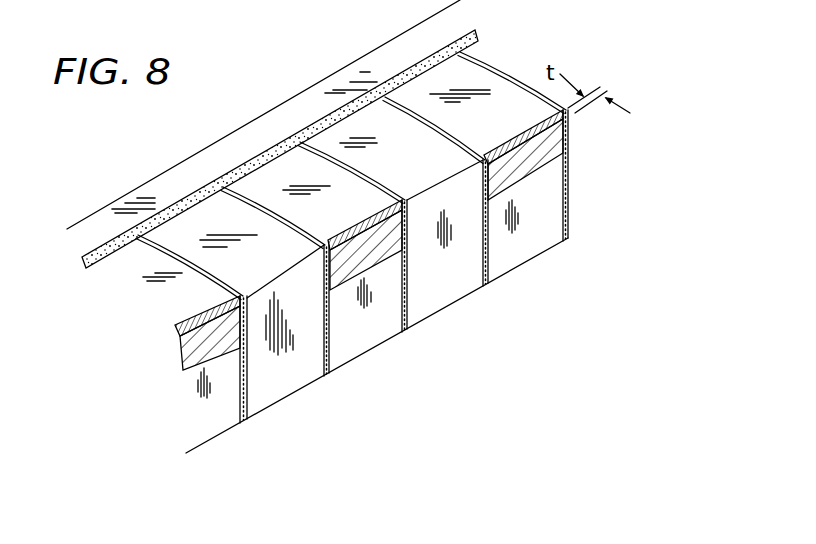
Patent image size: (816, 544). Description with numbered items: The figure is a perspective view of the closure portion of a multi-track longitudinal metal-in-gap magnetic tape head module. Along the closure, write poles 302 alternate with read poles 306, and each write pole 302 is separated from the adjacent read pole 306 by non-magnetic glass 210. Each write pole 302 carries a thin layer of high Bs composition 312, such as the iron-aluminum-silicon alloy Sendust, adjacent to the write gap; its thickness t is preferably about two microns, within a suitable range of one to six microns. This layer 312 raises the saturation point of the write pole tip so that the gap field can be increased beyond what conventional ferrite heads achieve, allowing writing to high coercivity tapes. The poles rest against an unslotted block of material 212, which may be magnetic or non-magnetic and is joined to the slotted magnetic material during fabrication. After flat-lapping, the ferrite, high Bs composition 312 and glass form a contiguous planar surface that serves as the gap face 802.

The unslotted block of material 212 is at (390, 65).
The non-magnetic glass 210 is at (324, 378).
The read pole 306 is at (210, 222).
The write closure pole 302 is at (365, 330).
The high Bs composition 312 is at (397, 217).
The gap face 802 is at (218, 412).